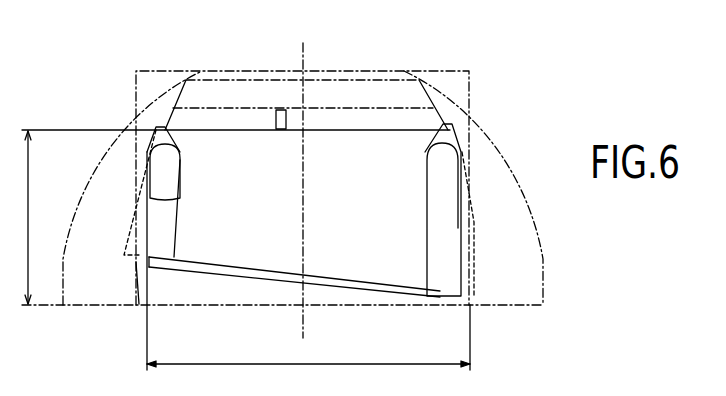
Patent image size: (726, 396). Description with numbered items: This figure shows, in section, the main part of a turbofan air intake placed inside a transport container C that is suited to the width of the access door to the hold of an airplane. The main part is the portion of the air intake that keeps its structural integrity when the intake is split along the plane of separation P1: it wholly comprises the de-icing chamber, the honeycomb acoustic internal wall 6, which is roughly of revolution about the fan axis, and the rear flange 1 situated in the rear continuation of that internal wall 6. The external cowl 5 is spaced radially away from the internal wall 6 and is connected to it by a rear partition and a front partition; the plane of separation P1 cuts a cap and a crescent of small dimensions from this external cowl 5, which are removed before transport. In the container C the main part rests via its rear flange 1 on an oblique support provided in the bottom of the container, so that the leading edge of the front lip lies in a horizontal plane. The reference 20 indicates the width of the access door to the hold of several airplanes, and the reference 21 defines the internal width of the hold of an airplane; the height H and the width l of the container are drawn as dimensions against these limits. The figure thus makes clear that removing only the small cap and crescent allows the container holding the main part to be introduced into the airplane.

The rear flange 1 is at (240, 268).
The external cowl 5 is at (460, 228).
The honeycomb acoustic internal wall 6 is at (375, 260).
The width of the access door to the hold 20 is at (447, 71).
The internal width of the hold 21 is at (497, 143).
The transport container C is at (233, 130).
The plane of separation P1 is at (175, 199).
The height H is at (36, 217).
The width l is at (308, 337).